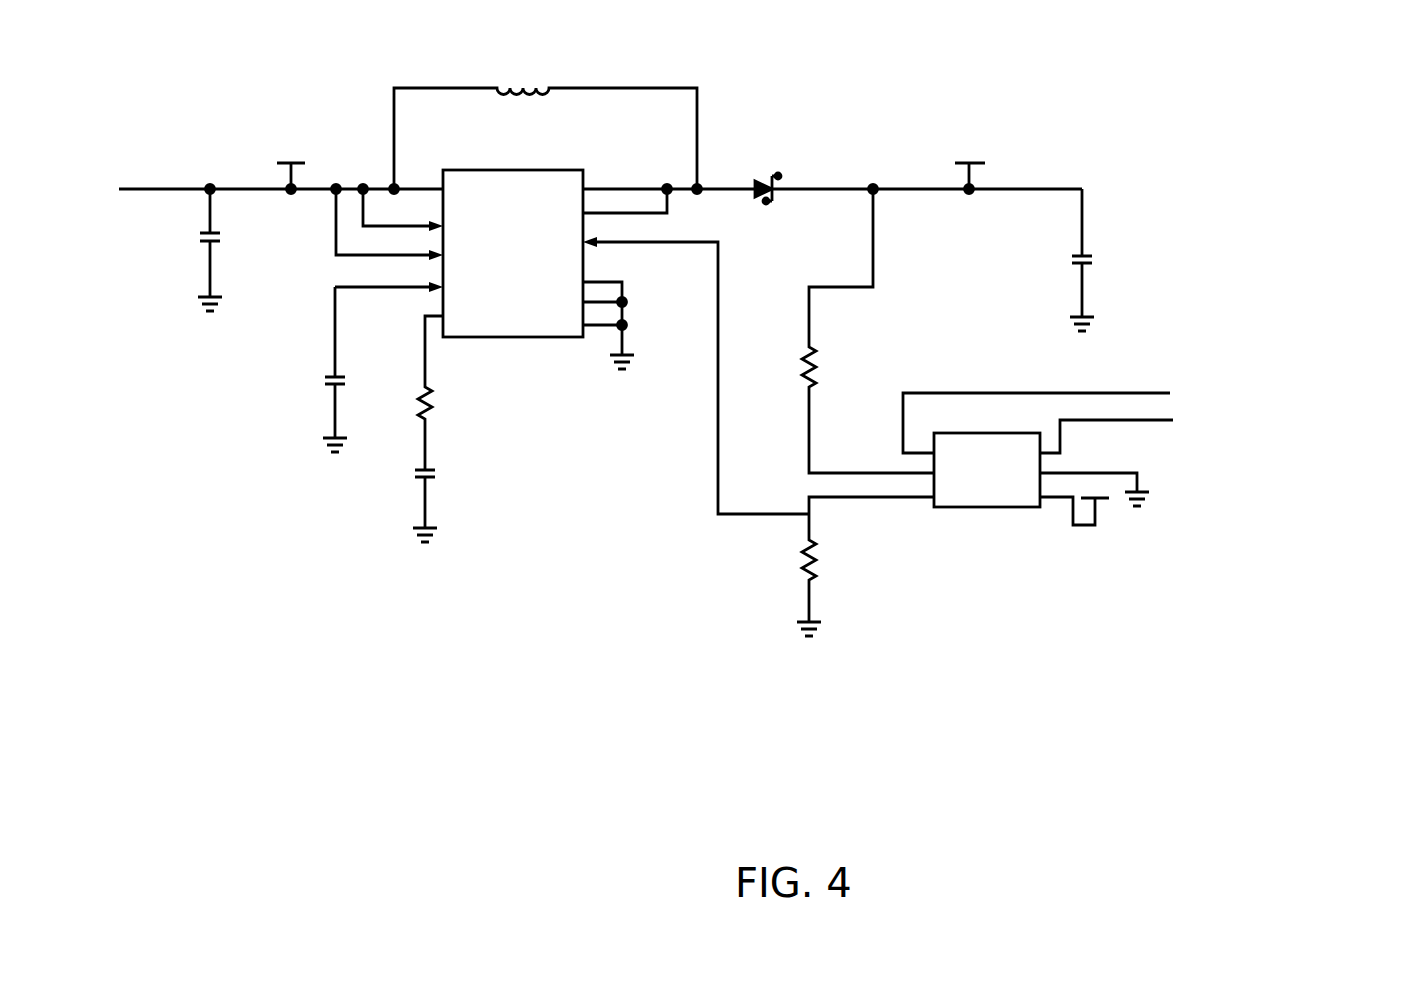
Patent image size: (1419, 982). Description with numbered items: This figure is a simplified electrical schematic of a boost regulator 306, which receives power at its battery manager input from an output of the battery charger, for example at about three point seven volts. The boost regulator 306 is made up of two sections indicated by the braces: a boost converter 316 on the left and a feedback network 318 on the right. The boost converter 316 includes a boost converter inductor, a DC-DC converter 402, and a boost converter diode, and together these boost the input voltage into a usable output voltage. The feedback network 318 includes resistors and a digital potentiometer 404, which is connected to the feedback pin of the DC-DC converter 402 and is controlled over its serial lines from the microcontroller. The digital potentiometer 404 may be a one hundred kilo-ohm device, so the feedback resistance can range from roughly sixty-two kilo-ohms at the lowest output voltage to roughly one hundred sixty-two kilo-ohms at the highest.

The boost regulator 306 is at (246, 66).
The boost converter 316 is at (768, 695).
The feedback network 318 is at (1337, 695).
The DC-DC converter 402 is at (549, 405).
The digital potentiometer 404 is at (1005, 565).